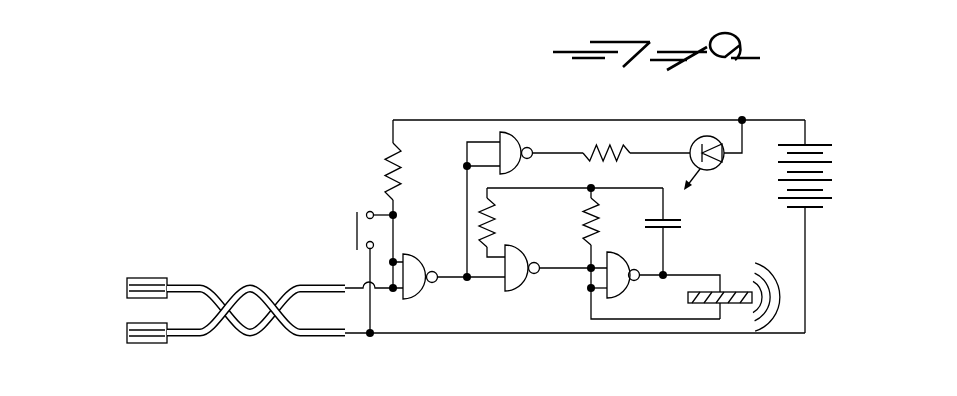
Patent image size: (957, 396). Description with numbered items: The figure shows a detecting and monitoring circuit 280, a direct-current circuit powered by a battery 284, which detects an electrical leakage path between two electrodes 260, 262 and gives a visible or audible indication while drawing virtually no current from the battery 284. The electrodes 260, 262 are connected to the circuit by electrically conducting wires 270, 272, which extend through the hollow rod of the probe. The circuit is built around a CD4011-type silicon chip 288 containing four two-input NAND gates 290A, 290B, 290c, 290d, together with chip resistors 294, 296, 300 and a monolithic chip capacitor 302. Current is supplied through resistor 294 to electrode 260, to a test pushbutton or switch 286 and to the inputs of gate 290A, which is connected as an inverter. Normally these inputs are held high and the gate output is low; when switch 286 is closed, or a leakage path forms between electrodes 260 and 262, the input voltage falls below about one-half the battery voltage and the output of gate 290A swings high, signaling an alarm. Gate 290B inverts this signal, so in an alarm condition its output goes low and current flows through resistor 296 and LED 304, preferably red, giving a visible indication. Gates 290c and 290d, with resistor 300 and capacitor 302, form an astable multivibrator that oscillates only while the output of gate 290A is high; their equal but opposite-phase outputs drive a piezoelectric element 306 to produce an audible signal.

The circuit 280 is at (545, 108).
The electrode 260 is at (140, 278).
The electrode 262 is at (145, 343).
The electrically conducting wire 270 is at (240, 336).
The electrically conducting wire 272 is at (236, 285).
The battery 284 is at (812, 143).
The test pushbutton or switch 286 is at (357, 233).
The CD4011-type silicon chip 288 is at (477, 240).
The NAND gate 290A is at (416, 298).
The NAND gate 290B is at (509, 132).
The NAND gate 290c is at (509, 291).
The NAND gate 290d is at (617, 297).
The chip resistor 294 is at (390, 163).
The chip resistor 296 is at (650, 110).
The chip resistor 300 is at (587, 220).
The monolithic chip capacitor 302 is at (680, 222).
The LED 304 is at (722, 137).
The piezoelectric element 306 is at (740, 306).